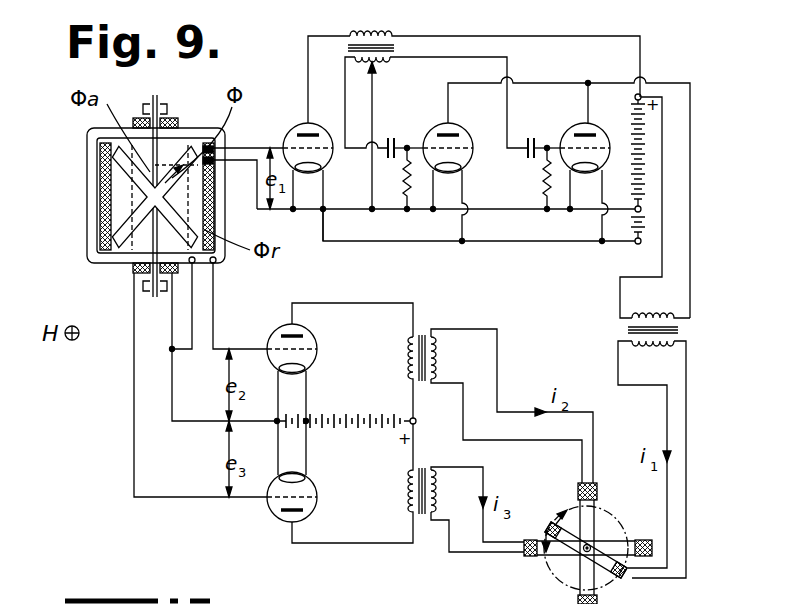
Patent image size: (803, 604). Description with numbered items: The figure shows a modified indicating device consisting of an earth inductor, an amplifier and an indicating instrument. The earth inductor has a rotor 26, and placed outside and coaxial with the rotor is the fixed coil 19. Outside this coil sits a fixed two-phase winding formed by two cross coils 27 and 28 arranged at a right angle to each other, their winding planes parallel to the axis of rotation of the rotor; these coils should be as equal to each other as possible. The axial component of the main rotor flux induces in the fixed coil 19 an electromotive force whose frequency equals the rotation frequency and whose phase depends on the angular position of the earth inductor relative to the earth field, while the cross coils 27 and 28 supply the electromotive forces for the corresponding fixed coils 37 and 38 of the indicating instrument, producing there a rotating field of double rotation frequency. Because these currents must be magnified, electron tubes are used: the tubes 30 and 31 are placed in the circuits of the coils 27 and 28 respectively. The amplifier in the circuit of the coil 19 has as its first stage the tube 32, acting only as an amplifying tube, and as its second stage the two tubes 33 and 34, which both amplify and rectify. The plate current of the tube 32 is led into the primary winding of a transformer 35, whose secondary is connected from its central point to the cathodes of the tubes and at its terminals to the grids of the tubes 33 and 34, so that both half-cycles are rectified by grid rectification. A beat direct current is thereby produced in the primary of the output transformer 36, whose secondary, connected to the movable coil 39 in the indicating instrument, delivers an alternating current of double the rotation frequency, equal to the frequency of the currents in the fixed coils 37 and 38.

The fixed coil 19 is at (105, 215).
The rotor 26 is at (130, 226).
The cross coil 27 is at (93, 168).
The cross coil 28 is at (166, 121).
The electron tube 30 is at (280, 344).
The electron tube 31 is at (275, 500).
The amplifying tube 32 is at (300, 138).
The electron tube 33 is at (460, 145).
The electron tube 34 is at (572, 145).
The transformer 35 is at (386, 42).
The output transformer 36 is at (632, 328).
The coil of indicating instrument 37 is at (598, 492).
The coil of indicating instrument 38 is at (530, 557).
The movable coil 39 is at (621, 578).